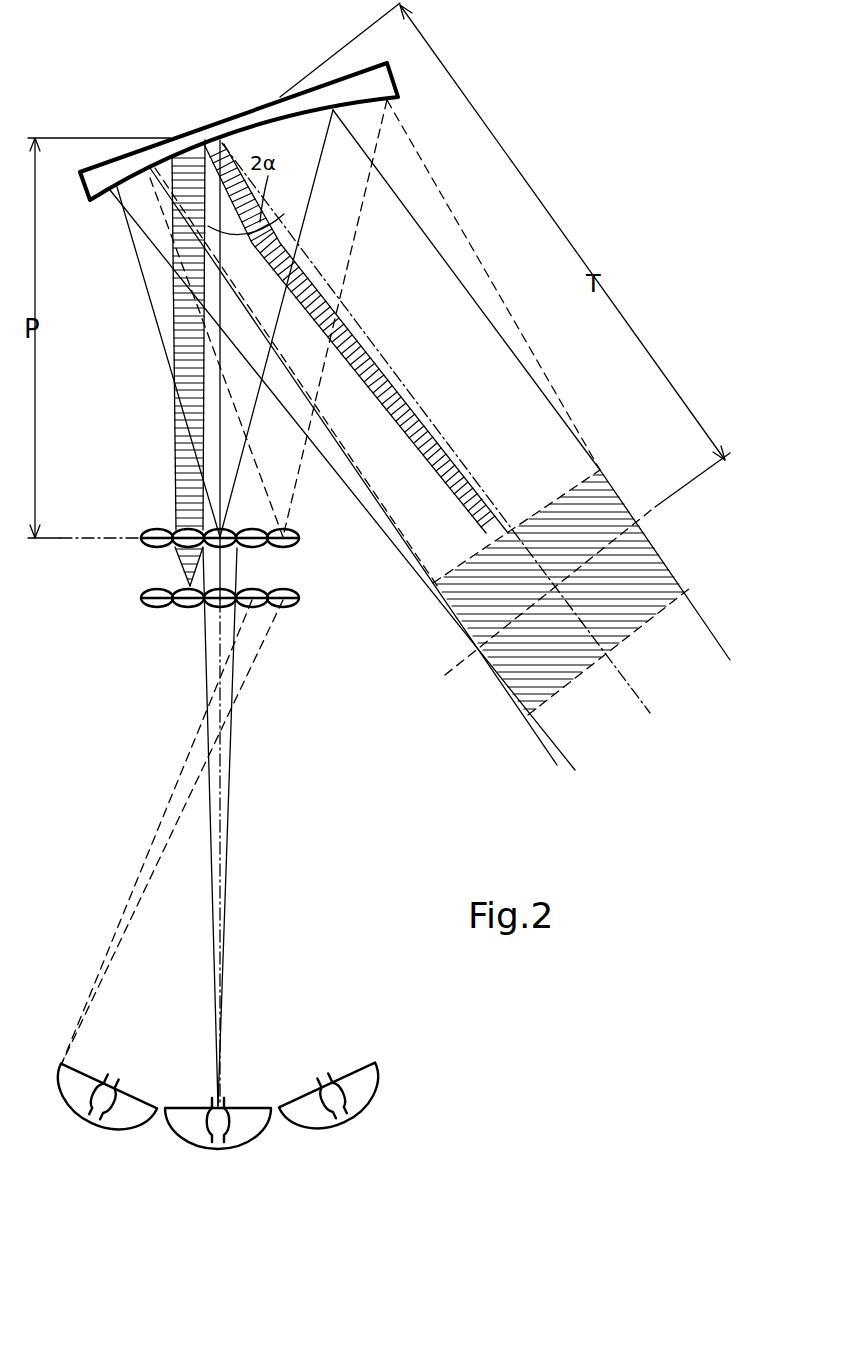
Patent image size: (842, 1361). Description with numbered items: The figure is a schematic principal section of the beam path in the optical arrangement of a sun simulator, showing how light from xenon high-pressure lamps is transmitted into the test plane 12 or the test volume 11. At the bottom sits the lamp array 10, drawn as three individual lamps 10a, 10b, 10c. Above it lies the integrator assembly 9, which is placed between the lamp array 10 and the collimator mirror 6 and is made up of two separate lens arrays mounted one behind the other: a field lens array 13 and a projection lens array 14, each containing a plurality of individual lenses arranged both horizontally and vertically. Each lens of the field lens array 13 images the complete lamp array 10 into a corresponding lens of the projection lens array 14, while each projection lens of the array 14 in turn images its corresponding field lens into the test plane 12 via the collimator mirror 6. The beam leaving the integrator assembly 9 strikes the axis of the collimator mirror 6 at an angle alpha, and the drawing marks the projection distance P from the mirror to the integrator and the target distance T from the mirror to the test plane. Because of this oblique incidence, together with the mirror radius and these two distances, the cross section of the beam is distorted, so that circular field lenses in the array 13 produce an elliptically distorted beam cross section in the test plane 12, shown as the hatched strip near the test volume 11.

The collimator mirror 6 is at (140, 166).
The integrator assembly 9 is at (128, 575).
The lamp array 10 is at (268, 1037).
The lamp 10a is at (112, 1117).
The lamp 10b is at (232, 1138).
The lamp 10c is at (328, 1118).
The test volume 11 is at (595, 508).
The test plane 12 is at (652, 528).
The field lens array 13 is at (150, 606).
The projection lens array 14 is at (153, 530).